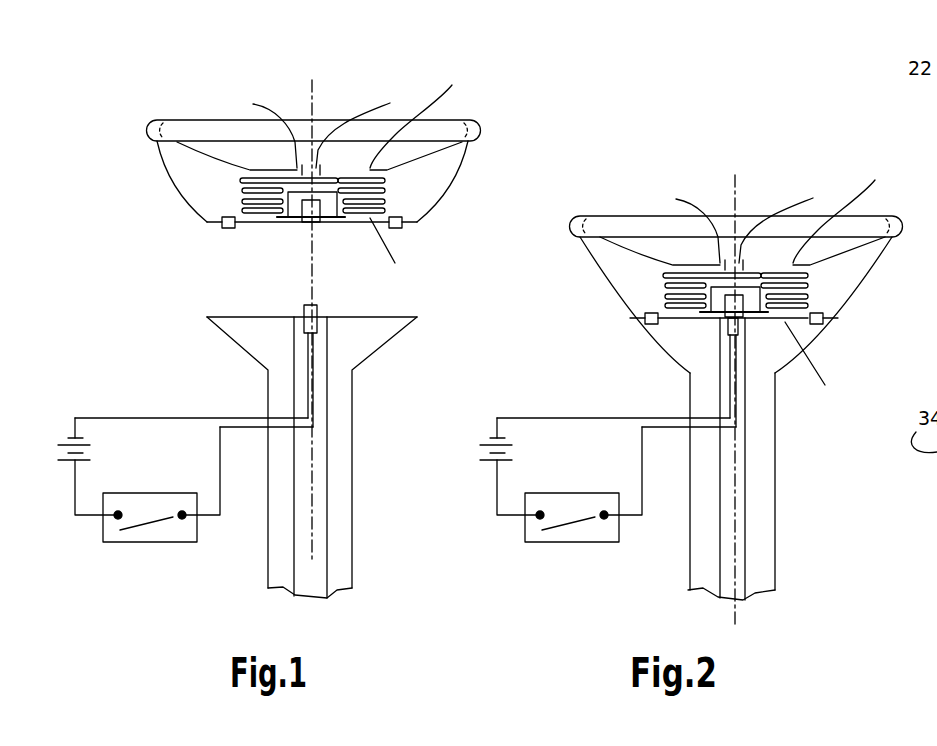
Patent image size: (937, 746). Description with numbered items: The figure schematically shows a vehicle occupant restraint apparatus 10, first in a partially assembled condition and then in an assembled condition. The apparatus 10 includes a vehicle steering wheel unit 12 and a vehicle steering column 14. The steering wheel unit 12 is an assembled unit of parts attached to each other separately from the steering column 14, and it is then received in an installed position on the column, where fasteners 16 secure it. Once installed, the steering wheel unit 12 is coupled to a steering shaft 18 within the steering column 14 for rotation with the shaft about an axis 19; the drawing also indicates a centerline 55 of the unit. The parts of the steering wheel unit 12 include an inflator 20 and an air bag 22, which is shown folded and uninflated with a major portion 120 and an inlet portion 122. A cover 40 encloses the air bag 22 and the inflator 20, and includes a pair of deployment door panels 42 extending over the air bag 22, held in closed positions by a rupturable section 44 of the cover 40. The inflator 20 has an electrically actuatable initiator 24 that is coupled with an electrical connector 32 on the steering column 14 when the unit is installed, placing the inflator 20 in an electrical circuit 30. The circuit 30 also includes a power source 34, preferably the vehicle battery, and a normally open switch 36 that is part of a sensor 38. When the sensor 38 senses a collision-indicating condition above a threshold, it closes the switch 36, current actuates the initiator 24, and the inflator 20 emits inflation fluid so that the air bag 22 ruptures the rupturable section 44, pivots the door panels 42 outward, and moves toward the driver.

In FIG. 1, the vehicle occupant restraint apparatus 10 is at (158, 84).
In FIG. 2, the vehicle occupant restraint apparatus 10 is at (578, 182).
In FIG. 1, the vehicle steering wheel unit 12 is at (142, 138).
In FIG. 2, the vehicle steering wheel unit 12 is at (568, 237).
In FIG. 1, the vehicle steering column 14 is at (260, 533).
In FIG. 2, the vehicle steering column 14 is at (682, 533).
In FIG. 1, the fasteners 16 is at (223, 228).
In FIG. 2, the fasteners 16 is at (648, 325).
In FIG. 1, the steering shaft 18 is at (315, 510).
In FIG. 2, the steering shaft 18 is at (737, 510).
In FIG. 1, the axis 19 is at (308, 542).
In FIG. 2, the axis 19 is at (733, 560).
In FIG. 1, the inflator 20 is at (298, 203).
In FIG. 2, the inflator 20 is at (711, 293).
In FIG. 1, the inflatable vehicle occupant restraint 22 is at (243, 185).
In FIG. 2, the inflatable vehicle occupant restraint 22 is at (662, 282).
In FIG. 1, the electrically actuatable initiator 24 is at (315, 222).
In FIG. 2, the electrically actuatable initiator 24 is at (737, 302).
In FIG. 1, the electrical circuit 30 is at (75, 408).
In FIG. 2, the electrical circuit 30 is at (497, 408).
In FIG. 1, the electrical connector 32 is at (315, 310).
In FIG. 2, the electrical connector 32 is at (736, 325).
In FIG. 1, the power source 34 is at (67, 460).
In FIG. 2, the power source 34 is at (489, 460).
In FIG. 1, the normally open switch 36 is at (155, 525).
In FIG. 2, the normally open switch 36 is at (577, 525).
In FIG. 1, the sensor 38 is at (183, 543).
In FIG. 2, the sensor 38 is at (605, 543).
In FIG. 1, the cover 40 is at (438, 197).
In FIG. 2, the cover 40 is at (858, 290).
In FIG. 1, the deployment door panels 42 is at (351, 115).
In FIG. 2, the deployment door panels 42 is at (768, 211).
In FIG. 1, the rupturable section 44 is at (363, 125).
In FIG. 2, the rupturable section 44 is at (784, 220).
In FIG. 1, the vertical axis 55 is at (317, 87).
In FIG. 2, the vertical axis 55 is at (739, 182).
In FIG. 1, the major portion 120 is at (387, 178).
In FIG. 2, the major portion 120 is at (805, 275).
In FIG. 1, the inlet portion 122 is at (396, 255).
In FIG. 2, the inlet portion 122 is at (824, 361).